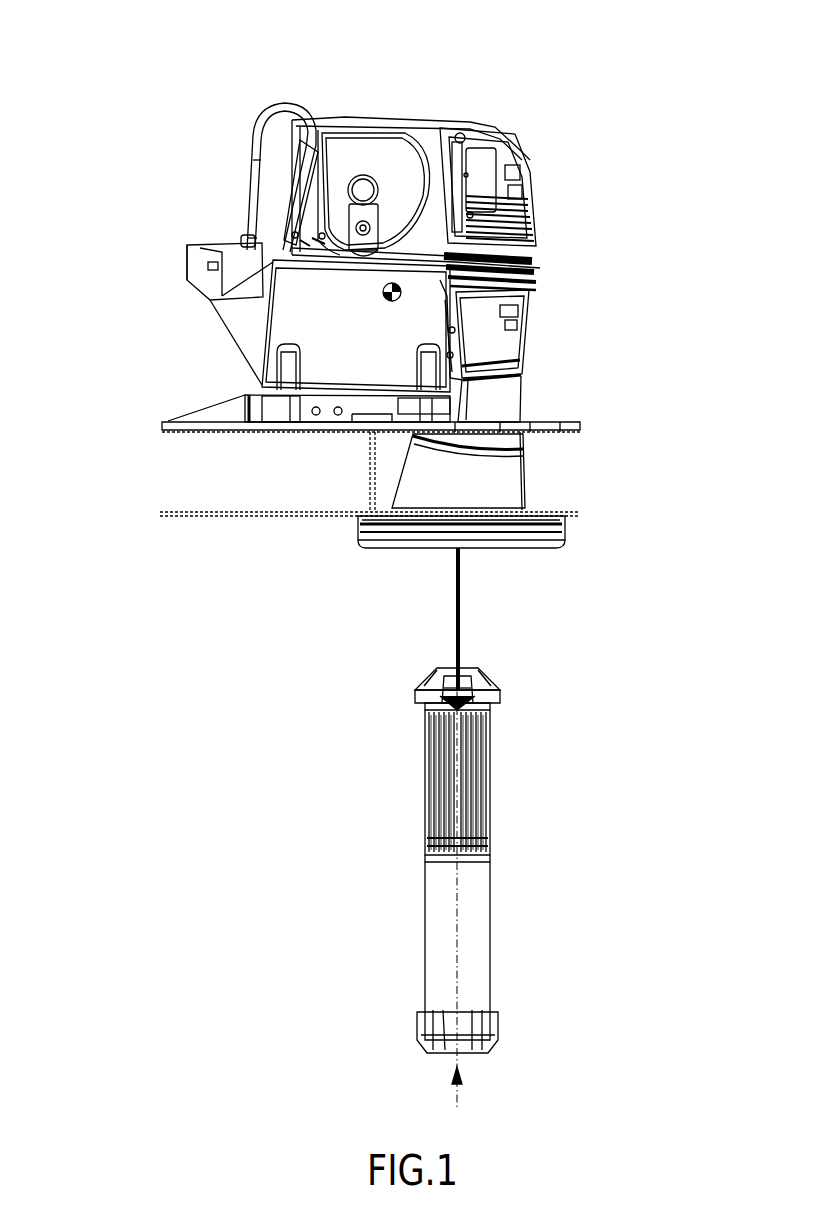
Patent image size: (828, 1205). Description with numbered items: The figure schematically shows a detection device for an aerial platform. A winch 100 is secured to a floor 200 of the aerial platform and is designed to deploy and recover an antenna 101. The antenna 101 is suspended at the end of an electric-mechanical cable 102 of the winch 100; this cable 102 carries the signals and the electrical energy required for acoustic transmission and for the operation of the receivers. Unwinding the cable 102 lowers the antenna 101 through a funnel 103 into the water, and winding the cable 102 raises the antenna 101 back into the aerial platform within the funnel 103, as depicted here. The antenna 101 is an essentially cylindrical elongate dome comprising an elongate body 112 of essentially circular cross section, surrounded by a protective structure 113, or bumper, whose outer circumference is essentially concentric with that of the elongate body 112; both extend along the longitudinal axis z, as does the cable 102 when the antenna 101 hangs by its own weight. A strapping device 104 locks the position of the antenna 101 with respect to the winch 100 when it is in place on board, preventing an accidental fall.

The winch 100 is at (342, 118).
The antenna 101 is at (506, 916).
The electric-mechanical cable 102 is at (460, 612).
The funnel 103 is at (524, 475).
The strapping device 104 is at (558, 282).
The elongate body 112 is at (425, 924).
The protective structure 113 is at (420, 702).
The floor 200 is at (169, 420).